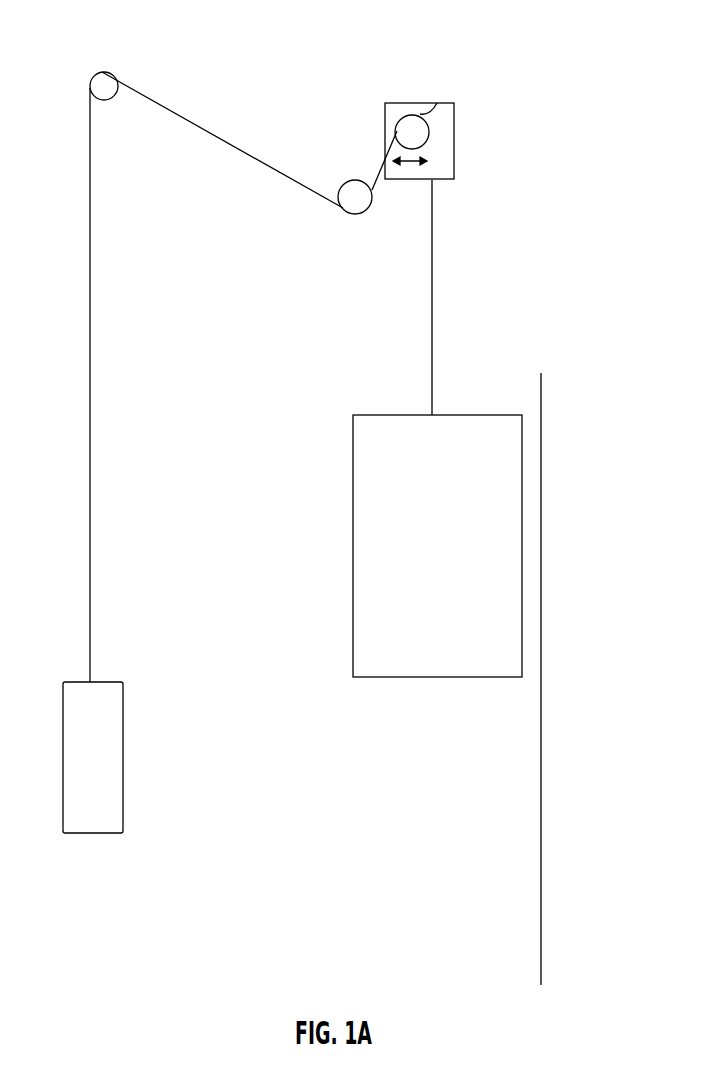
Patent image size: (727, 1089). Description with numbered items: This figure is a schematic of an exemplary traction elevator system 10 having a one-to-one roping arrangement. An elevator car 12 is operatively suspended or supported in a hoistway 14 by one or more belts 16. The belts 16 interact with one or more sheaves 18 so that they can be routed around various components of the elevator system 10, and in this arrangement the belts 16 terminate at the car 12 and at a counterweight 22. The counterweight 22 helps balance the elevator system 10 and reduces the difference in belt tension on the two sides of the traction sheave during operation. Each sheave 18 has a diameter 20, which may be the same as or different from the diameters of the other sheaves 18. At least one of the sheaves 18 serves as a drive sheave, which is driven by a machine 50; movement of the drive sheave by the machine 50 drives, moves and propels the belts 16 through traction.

The elevator system 10 is at (546, 78).
The elevator car 12 is at (437, 546).
The hoistway 14 is at (541, 605).
The belt 16 is at (247, 155).
The sheave 18 is at (99, 73).
The diameter 20 is at (413, 167).
The counterweight 22 is at (93, 757).
The machine 50 is at (404, 103).